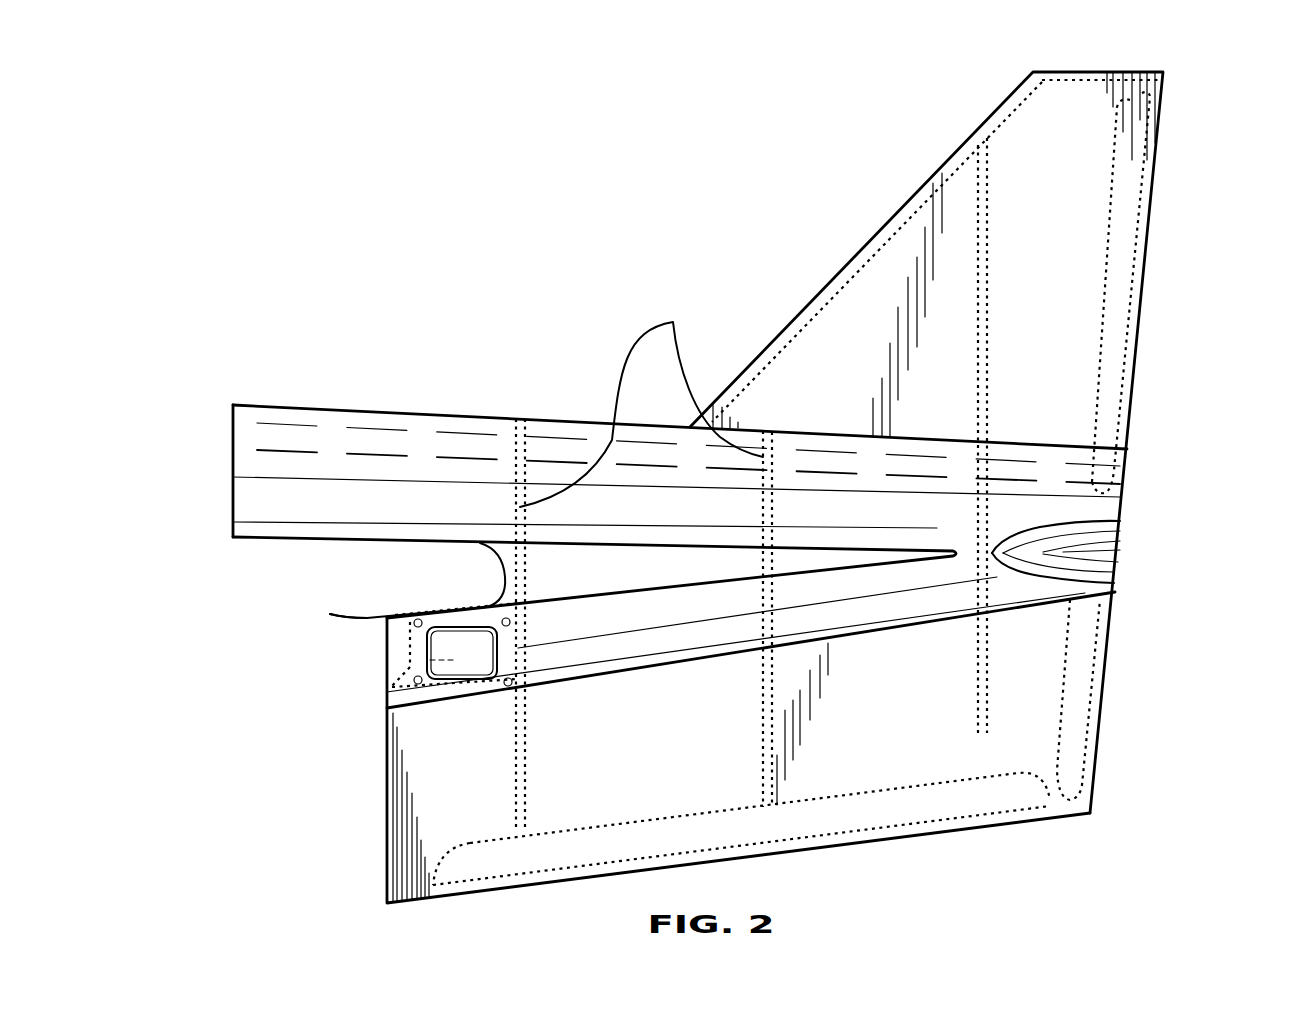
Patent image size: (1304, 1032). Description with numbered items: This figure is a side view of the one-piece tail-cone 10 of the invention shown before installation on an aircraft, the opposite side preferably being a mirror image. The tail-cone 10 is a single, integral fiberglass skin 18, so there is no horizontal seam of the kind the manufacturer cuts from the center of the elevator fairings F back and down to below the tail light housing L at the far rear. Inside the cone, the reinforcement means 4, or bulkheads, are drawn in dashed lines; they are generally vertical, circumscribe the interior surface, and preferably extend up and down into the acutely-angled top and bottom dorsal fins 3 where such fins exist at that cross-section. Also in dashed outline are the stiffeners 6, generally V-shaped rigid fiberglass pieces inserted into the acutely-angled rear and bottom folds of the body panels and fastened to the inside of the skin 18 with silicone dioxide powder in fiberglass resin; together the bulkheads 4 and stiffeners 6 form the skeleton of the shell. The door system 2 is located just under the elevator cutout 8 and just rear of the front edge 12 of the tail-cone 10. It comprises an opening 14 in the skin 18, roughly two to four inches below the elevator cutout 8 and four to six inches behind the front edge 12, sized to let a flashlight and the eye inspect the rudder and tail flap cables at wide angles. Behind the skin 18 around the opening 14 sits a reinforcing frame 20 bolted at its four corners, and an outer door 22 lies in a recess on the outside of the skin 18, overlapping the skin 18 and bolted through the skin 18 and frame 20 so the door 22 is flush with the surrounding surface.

The door system 2 is at (326, 631).
The dorsal fin 3 is at (1193, 70).
The reinforcement means 4 is at (977, 355).
The stiffeners 6 is at (1098, 387).
The elevator cutout 8 is at (444, 573).
The tail-cone 10 is at (522, 218).
The front edge 12 is at (387, 650).
The opening 14 is at (387, 705).
The tail-cone skin 18 is at (632, 719).
The reinforcing frame 20 is at (330, 614).
The outer door 22 is at (463, 648).
The elevator fairings F is at (640, 558).
The tail light housing L is at (1099, 550).